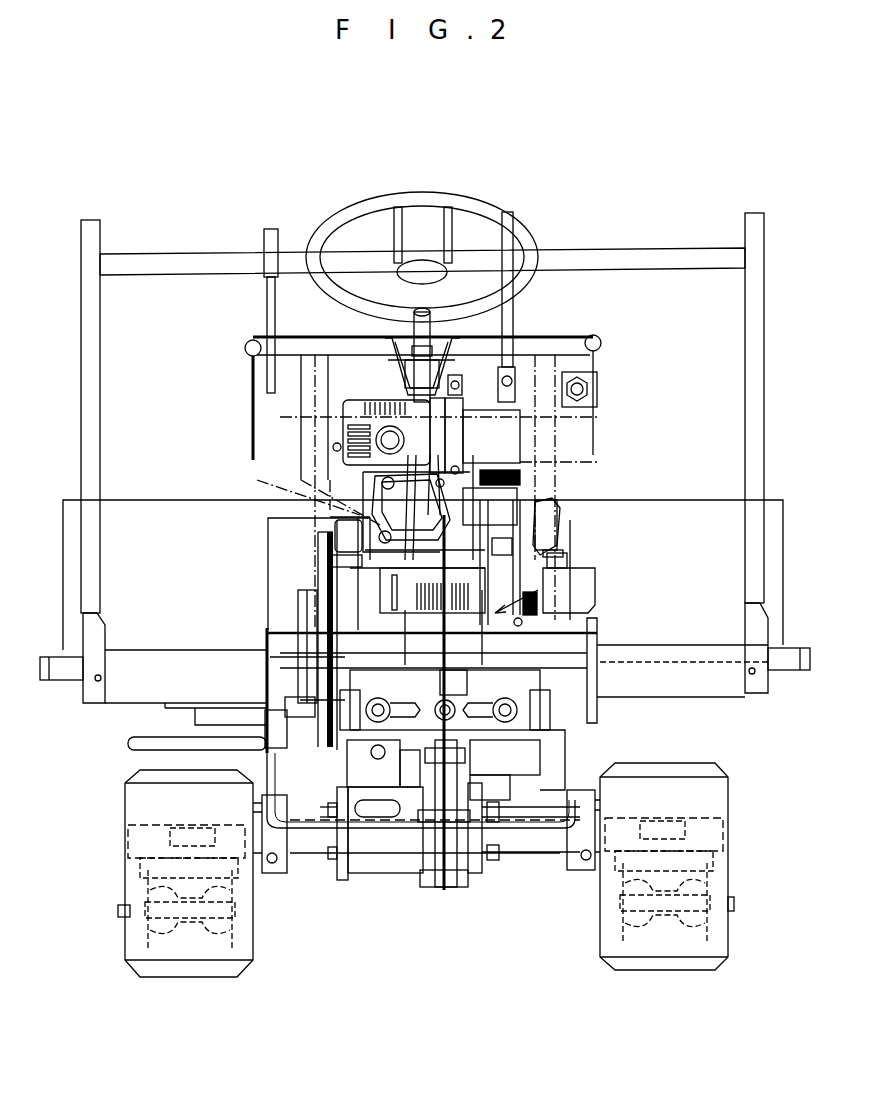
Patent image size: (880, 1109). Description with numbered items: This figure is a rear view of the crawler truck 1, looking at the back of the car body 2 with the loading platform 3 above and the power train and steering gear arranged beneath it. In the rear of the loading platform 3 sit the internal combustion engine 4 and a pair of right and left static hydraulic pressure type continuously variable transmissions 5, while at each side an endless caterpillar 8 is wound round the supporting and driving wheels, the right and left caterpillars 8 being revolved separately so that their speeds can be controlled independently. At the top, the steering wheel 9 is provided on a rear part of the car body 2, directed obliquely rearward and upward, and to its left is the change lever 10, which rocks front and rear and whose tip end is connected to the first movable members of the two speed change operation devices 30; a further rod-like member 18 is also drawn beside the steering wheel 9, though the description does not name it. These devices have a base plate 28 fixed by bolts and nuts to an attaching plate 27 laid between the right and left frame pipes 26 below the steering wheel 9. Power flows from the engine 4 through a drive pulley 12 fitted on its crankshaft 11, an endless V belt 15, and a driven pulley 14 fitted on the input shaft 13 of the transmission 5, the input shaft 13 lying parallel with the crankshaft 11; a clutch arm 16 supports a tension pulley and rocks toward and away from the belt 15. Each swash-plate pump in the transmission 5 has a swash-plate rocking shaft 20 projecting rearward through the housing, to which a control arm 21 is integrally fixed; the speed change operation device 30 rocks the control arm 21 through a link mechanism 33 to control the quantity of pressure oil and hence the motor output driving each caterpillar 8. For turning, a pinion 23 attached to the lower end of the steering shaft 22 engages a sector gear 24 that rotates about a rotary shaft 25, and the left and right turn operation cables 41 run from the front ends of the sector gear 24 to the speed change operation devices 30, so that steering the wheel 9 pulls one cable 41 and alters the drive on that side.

The crawler truck 1 is at (622, 180).
The car body 2 is at (266, 720).
The loading platform 3 is at (165, 500).
The internal combustion engine 4 is at (530, 486).
The static hydraulic pressure type continuously variable transmission 5 is at (375, 790).
The endless caterpillar 8 is at (125, 806).
The steering wheel 9 is at (417, 192).
The change lever 10 is at (264, 240).
The crankshaft 11 is at (320, 537).
The drive pulley 12 is at (318, 556).
The input shaft 13 is at (335, 750).
The driven pulley 14 is at (322, 732).
The endless V belt 15 is at (298, 636).
The clutch arm 16 is at (298, 615).
The control rod 18 is at (513, 318).
The swash-plate rocking shaft 20 is at (300, 718).
The control arm 21 is at (446, 722).
The steering shaft 22 is at (388, 335).
The pinion 23 is at (442, 342).
The sector gear 24 is at (455, 382).
The rotary shaft 25 is at (405, 368).
The frame pipe 26 is at (305, 408).
The attaching plate 27 is at (330, 490).
The base plate 28 is at (600, 662).
The speed change operation device 30 is at (570, 596).
The link mechanism 33 is at (455, 684).
The turn operation cable 41 is at (335, 445).